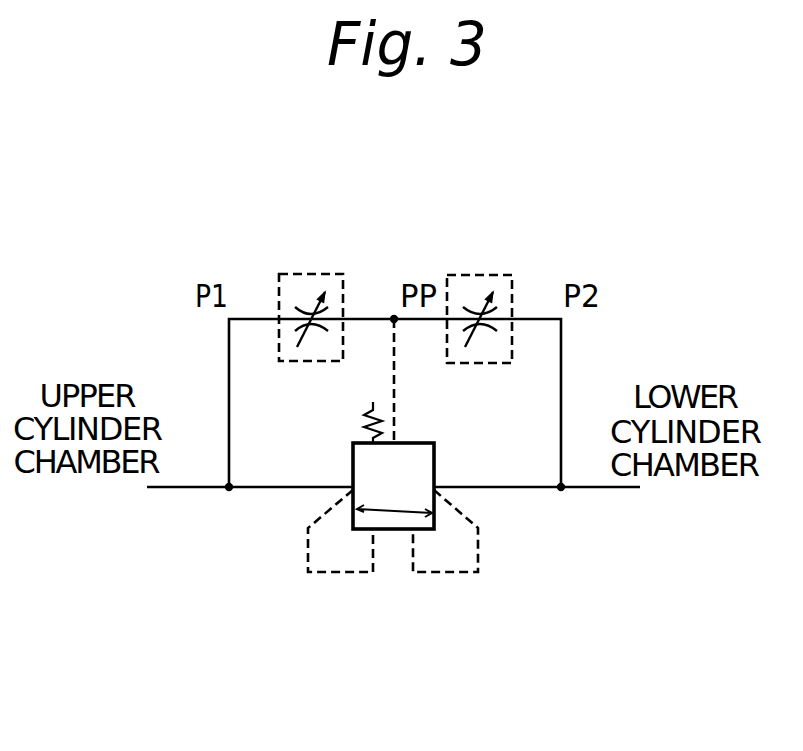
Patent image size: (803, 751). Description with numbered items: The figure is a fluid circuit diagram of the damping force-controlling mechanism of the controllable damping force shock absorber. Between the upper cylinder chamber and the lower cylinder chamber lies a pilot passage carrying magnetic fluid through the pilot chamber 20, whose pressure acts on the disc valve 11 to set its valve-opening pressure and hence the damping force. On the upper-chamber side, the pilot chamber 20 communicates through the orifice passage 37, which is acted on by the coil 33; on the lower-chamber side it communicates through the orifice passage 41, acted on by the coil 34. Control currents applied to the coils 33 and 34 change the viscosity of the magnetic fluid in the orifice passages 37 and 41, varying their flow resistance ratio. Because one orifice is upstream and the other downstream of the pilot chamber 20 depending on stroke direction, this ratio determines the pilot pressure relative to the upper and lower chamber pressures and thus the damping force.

The disc valve 11 is at (397, 530).
The pilot chamber 20 is at (394, 319).
The coil 33 is at (265, 244).
The orifice passage 37 is at (312, 274).
The coil 34 is at (529, 245).
The orifice passage 41 is at (495, 275).